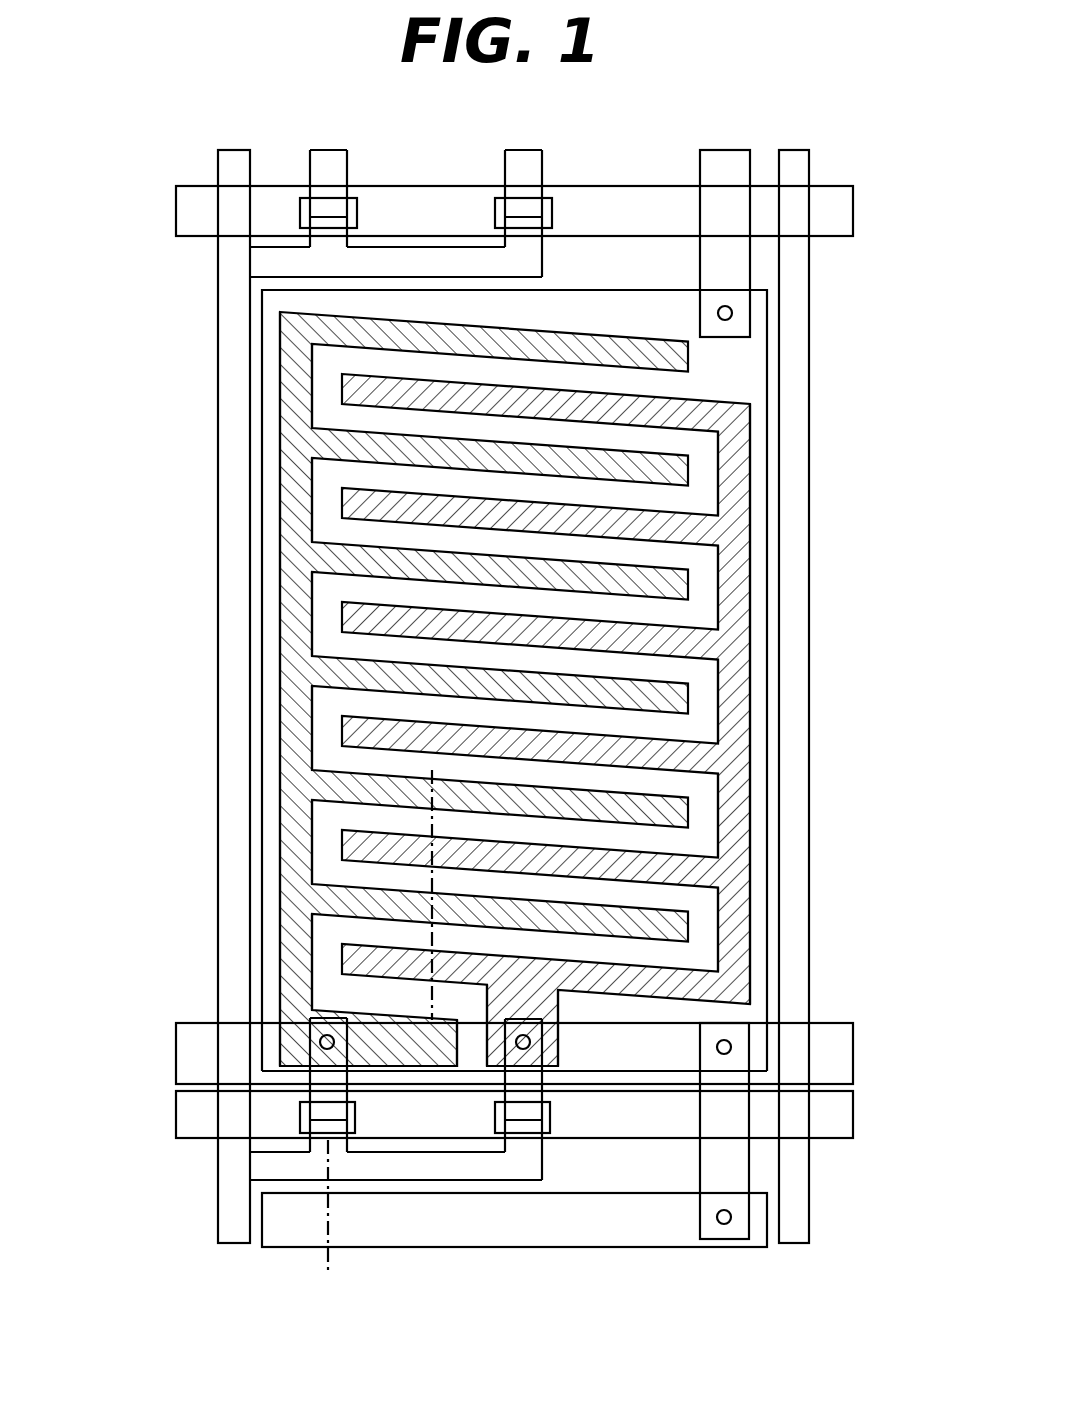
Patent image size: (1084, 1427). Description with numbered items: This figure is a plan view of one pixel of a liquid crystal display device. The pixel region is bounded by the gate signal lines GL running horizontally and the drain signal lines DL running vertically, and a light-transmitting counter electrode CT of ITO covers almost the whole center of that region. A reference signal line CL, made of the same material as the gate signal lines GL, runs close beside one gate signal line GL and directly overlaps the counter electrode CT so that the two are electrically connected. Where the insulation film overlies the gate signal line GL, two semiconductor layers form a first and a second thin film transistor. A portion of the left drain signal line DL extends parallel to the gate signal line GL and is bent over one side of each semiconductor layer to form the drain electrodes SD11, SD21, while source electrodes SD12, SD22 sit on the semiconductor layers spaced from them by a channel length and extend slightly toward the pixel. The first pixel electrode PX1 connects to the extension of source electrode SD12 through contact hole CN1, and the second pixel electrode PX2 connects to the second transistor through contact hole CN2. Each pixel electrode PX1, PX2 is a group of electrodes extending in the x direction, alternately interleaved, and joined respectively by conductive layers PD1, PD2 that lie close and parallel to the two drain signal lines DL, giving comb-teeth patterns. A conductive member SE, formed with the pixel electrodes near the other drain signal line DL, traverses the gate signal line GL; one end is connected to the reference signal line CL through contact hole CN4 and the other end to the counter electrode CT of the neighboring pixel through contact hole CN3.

The gate signal line GL is at (192, 217).
The drain signal line DL is at (232, 768).
The reference signal line CL is at (838, 1057).
The counter electrode CT is at (270, 405).
The first pixel electrode PX1 is at (370, 465).
The second pixel electrode PX2 is at (663, 525).
The conductive layer PD1 is at (280, 683).
The conductive layer PD2 is at (750, 708).
The drain electrode SD11 is at (322, 1150).
The source electrode SD12 is at (280, 1060).
The drain electrode SD21 is at (522, 1145).
The source electrode SD22 is at (530, 1087).
The contact hole CN1 is at (320, 1040).
The contact hole CN2 is at (515, 1045).
The contact hole CN3 is at (729, 1224).
The contact hole CN4 is at (730, 1047).
The conductive member SE is at (753, 1165).